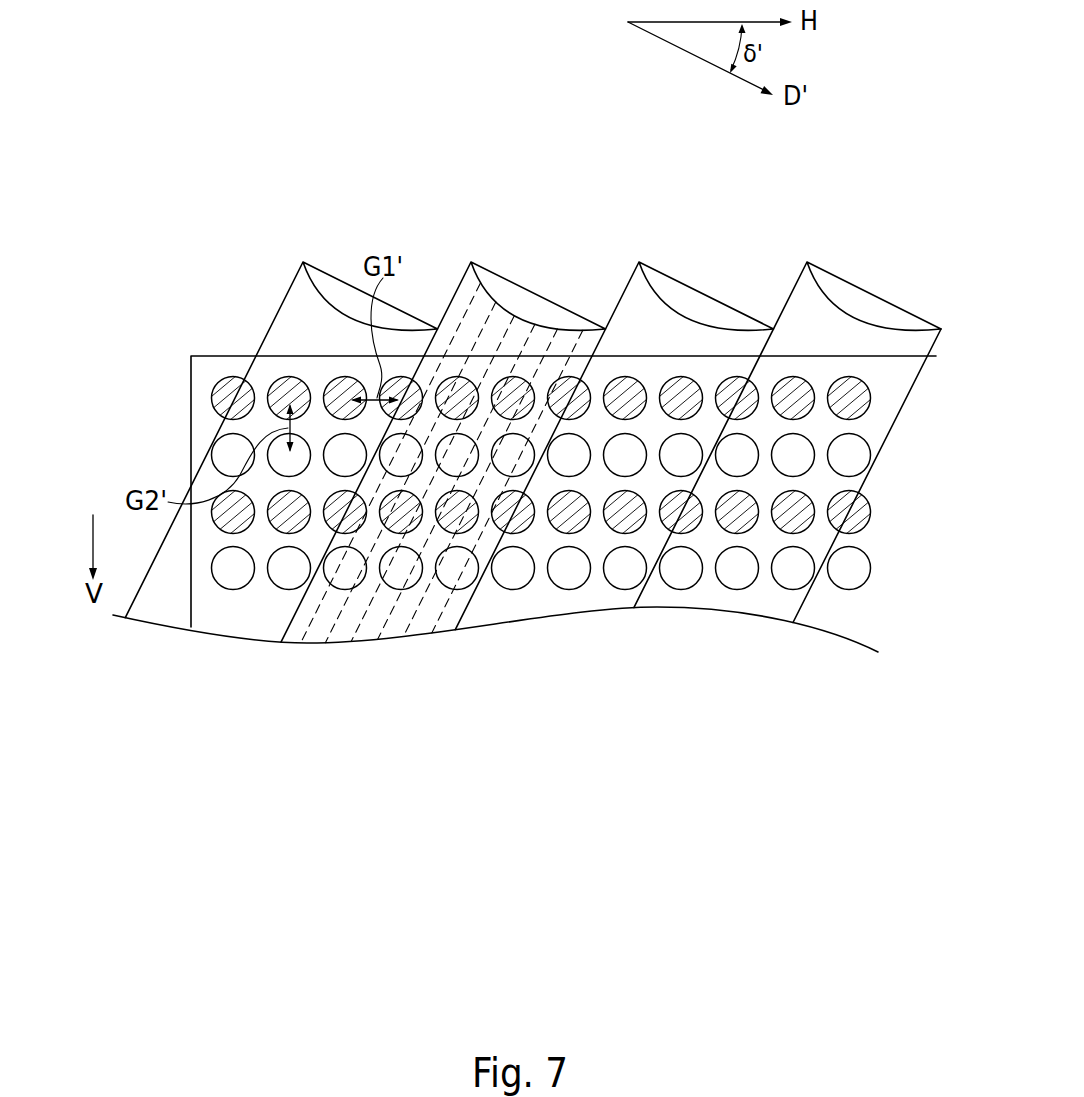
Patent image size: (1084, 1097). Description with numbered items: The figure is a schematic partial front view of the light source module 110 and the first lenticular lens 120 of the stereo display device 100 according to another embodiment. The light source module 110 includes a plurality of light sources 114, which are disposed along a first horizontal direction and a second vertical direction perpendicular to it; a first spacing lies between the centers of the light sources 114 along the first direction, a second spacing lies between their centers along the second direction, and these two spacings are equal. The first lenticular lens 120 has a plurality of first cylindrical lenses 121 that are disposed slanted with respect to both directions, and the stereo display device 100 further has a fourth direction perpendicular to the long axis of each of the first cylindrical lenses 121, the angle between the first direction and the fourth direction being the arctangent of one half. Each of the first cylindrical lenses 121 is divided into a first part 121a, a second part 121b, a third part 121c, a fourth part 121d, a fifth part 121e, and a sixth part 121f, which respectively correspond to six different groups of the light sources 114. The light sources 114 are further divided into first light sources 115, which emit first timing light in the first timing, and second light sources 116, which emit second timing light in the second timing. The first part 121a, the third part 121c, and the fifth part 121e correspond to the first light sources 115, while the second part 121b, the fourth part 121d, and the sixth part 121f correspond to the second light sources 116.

The stereo display device 100 is at (205, 55).
The light source module 110 is at (192, 356).
The light sources 114 is at (128, 383).
The first light sources 115 is at (224, 403).
The second light sources 116 is at (224, 457).
The first lenticular lens 120 is at (273, 318).
The first cylindrical lenses 121 is at (697, 132).
The first part 121a is at (471, 262).
The second part 121b is at (498, 283).
The third part 121c is at (523, 290).
The fourth part 121d is at (550, 300).
The fifth part 121e is at (573, 310).
The sixth part 121f is at (587, 307).